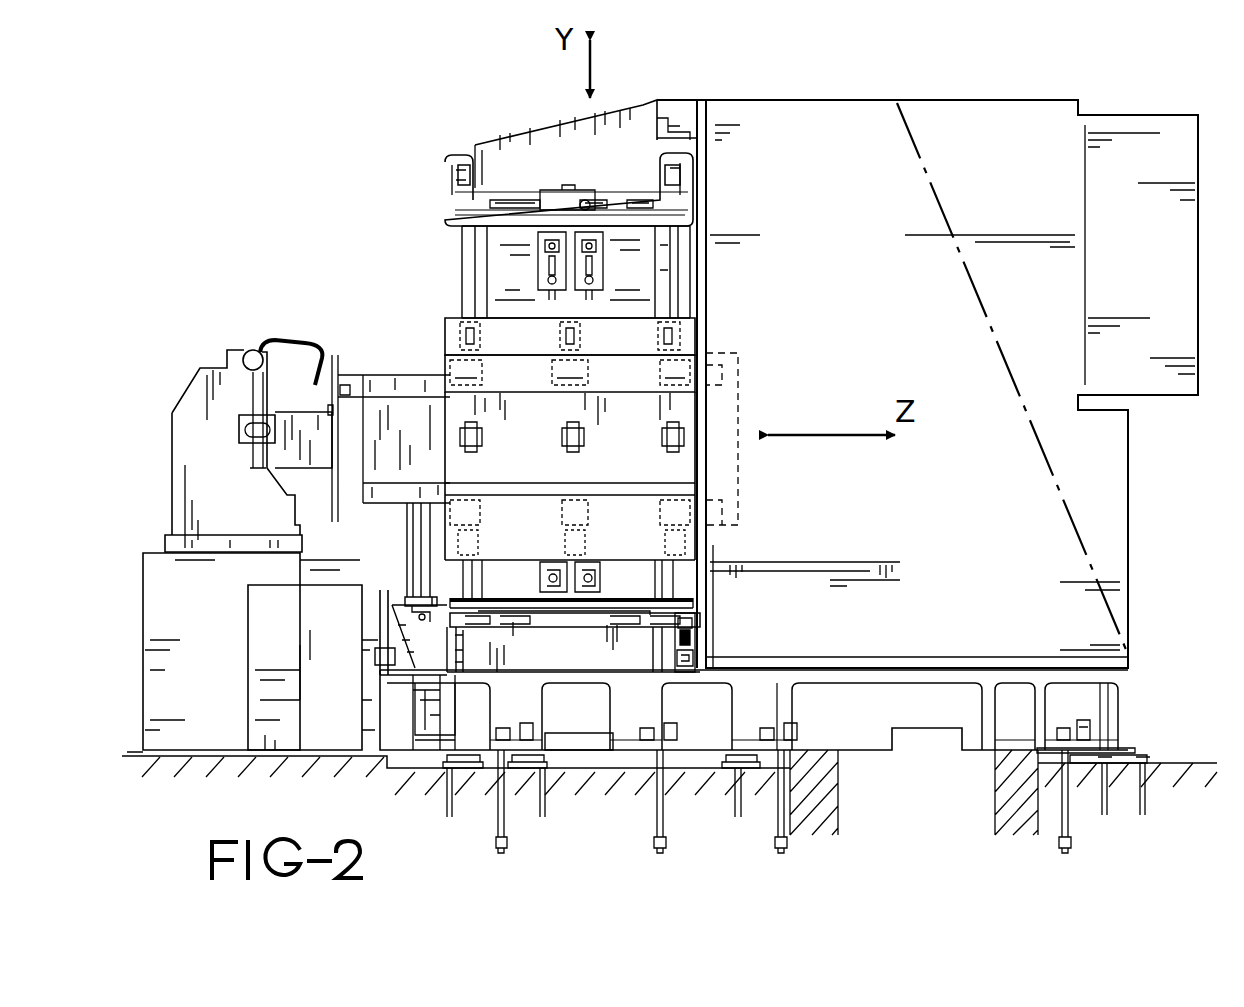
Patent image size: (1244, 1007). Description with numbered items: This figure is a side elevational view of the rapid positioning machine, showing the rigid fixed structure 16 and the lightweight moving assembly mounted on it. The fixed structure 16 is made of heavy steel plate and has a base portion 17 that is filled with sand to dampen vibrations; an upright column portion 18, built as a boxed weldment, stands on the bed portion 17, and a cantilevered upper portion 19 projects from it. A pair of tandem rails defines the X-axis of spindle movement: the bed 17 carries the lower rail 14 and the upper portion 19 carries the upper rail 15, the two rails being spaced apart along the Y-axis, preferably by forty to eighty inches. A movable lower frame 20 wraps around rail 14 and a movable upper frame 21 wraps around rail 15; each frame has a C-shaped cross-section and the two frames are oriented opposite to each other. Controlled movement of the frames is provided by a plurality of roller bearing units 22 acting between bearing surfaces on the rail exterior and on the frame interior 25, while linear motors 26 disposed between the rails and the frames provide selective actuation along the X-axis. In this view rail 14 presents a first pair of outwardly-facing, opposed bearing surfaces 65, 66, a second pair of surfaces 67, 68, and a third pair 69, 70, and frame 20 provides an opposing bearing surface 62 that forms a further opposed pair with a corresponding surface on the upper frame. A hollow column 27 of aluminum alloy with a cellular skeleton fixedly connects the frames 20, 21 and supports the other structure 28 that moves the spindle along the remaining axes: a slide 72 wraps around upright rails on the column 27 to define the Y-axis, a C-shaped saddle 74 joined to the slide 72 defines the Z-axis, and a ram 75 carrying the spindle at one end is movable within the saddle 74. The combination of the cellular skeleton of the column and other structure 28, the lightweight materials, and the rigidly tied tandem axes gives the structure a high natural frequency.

The rail 14 is at (583, 672).
The rail 15 is at (546, 173).
The fixed structure 16 is at (1130, 490).
The base portion 17 is at (686, 672).
The upright column portion 18 is at (945, 362).
The cantilevered upper portion 19 is at (612, 108).
The movable lower frame 20 is at (614, 606).
The movable upper frame 21 is at (690, 205).
The roller bearing units 22 is at (470, 180).
The frame interior 25 is at (598, 233).
The linear motors 26 is at (633, 205).
The column 27 is at (460, 276).
The other structure 28 is at (702, 318).
The bearing surface 62 is at (602, 608).
The bearing surface 65 is at (452, 627).
The bearing surface 66 is at (648, 633).
The bearing surface 67 is at (462, 606).
The bearing surface 68 is at (455, 665).
The bearing surface 69 is at (688, 616).
The bearing surface 70 is at (690, 658).
The slide 72 is at (620, 343).
The saddle 74 is at (630, 377).
The ram 75 is at (367, 458).